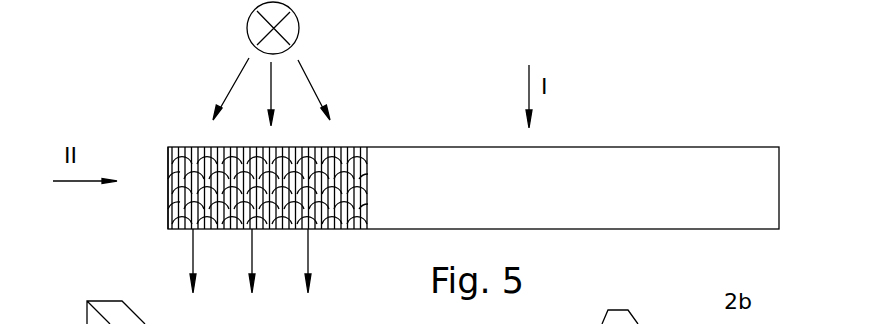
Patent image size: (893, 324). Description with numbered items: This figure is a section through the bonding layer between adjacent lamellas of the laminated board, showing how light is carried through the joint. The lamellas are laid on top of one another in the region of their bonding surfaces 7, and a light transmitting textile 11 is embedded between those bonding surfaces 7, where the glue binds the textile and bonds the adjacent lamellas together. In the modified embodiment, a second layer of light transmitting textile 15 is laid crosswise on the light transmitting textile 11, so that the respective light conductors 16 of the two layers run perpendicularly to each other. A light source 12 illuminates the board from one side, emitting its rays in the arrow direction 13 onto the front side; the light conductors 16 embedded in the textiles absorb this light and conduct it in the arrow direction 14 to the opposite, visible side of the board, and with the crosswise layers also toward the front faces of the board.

The bonding surface 7 is at (630, 187).
The light transmitting textile 11 is at (328, 185).
The second layer of light transmitting textile 15 is at (340, 165).
The light source 12 is at (258, 28).
The arrow direction 13 is at (230, 83).
The arrow direction 14 is at (307, 240).
The light conductor 16 is at (180, 205).